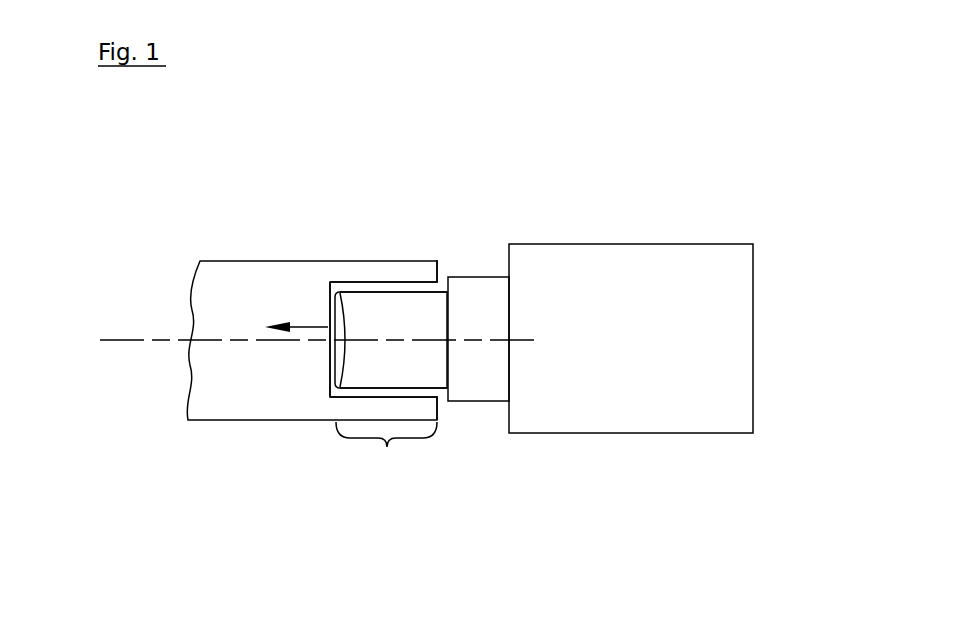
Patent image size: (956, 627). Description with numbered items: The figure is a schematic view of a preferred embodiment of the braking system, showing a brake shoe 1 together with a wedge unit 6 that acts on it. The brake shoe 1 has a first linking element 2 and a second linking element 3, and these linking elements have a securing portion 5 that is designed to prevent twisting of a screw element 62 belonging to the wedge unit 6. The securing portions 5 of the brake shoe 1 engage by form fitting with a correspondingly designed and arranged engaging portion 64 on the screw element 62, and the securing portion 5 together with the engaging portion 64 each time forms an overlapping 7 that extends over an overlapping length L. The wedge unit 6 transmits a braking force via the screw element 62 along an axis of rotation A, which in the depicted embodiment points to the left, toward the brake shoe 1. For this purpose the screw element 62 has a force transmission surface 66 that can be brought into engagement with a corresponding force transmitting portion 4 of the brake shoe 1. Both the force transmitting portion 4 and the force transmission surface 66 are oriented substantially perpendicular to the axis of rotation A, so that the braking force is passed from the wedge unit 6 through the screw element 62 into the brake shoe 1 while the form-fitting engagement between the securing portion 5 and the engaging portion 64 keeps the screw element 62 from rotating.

The brake shoe 1 is at (260, 292).
The first linking element 2 is at (403, 272).
The second linking element 3 is at (424, 415).
The force transmitting portion 4 is at (328, 297).
The securing portion 5 is at (385, 277).
The wedge unit 6 is at (626, 277).
The overlapping 7 is at (387, 447).
The screw element 62 is at (432, 310).
The engaging portion 64 is at (418, 292).
The force transmission surface 66 is at (337, 372).
The axis of rotation A is at (130, 340).
The overlapping length L is at (415, 389).